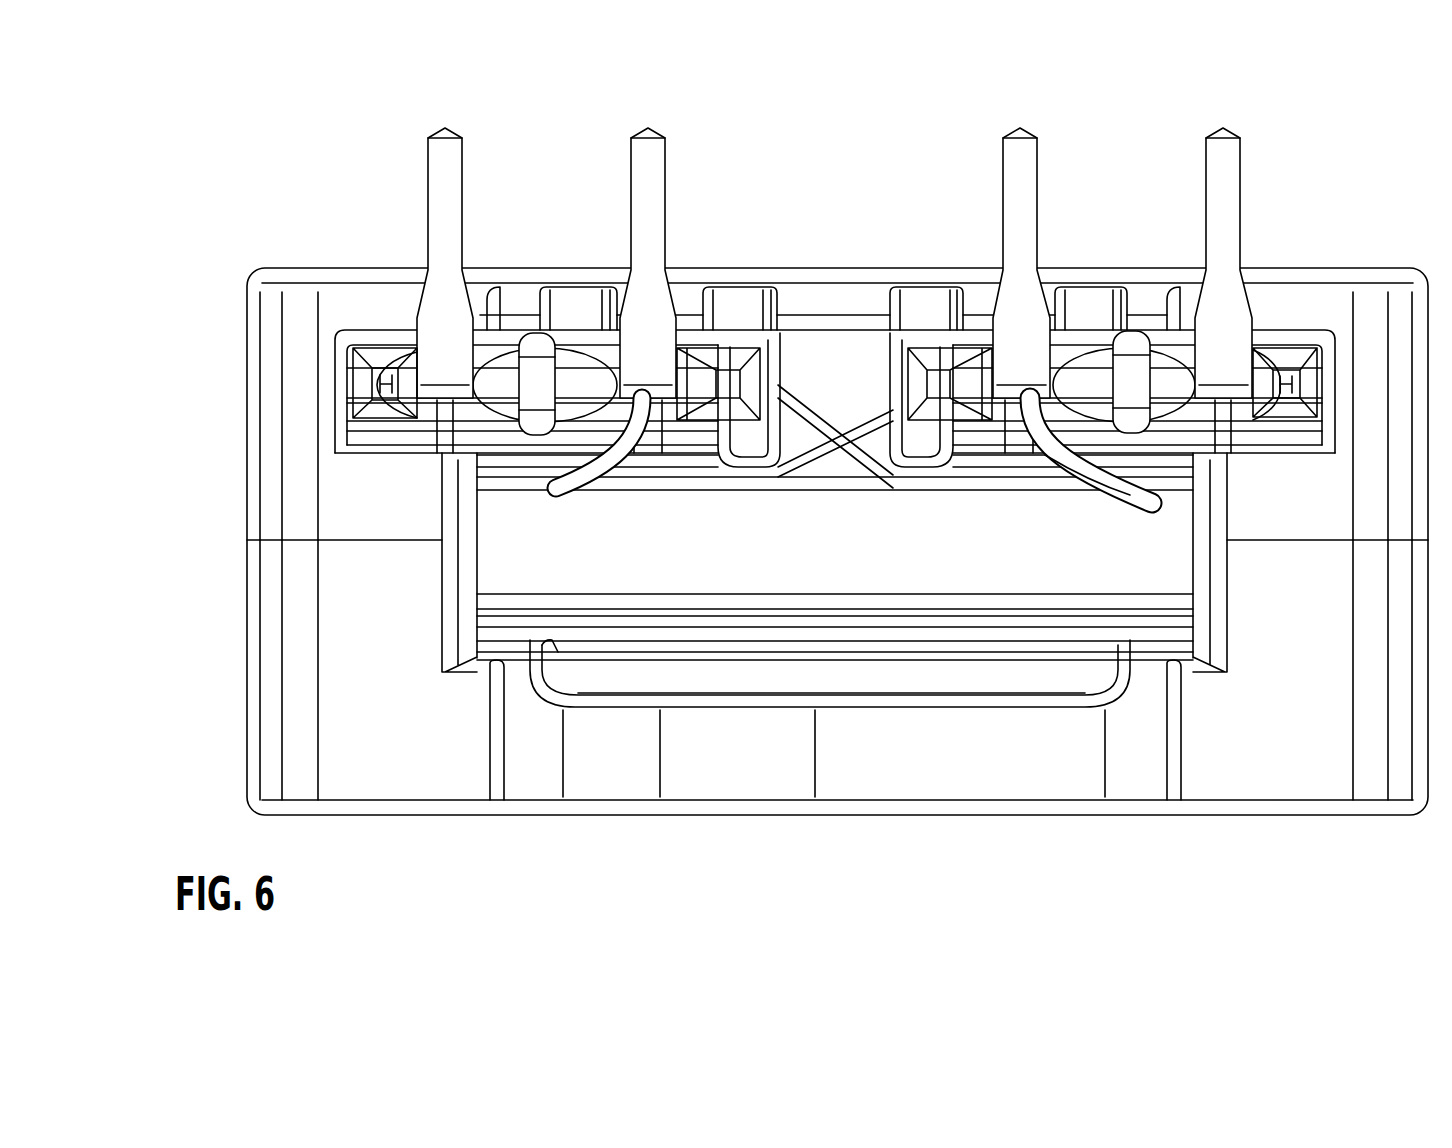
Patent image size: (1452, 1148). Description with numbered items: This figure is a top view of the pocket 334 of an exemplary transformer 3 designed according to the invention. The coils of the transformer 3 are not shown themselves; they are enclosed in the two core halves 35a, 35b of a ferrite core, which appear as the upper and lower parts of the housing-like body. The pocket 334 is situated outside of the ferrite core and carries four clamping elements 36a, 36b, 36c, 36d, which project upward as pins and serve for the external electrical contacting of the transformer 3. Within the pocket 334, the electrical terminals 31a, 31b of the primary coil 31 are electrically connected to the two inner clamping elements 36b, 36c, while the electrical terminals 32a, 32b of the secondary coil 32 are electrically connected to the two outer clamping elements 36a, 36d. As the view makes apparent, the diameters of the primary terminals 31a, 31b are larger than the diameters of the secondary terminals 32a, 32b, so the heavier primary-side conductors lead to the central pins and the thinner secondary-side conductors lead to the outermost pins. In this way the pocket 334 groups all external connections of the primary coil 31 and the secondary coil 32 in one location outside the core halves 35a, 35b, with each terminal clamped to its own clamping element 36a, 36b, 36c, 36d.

The transformer 3 is at (1338, 862).
The primary coil 31 is at (703, 560).
The secondary coil 32 is at (830, 756).
The electrical terminal of primary coil 31a is at (615, 455).
The electrical terminal of primary coil 31b is at (1045, 452).
The electrical terminal of secondary coil 32a is at (1225, 410).
The electrical terminal of secondary coil 32b is at (405, 390).
The pocket 334 is at (237, 124).
The core half 35a is at (362, 497).
The core half 35b is at (362, 637).
The clamping element 36a is at (1224, 158).
The clamping element 36b is at (1019, 158).
The clamping element 36c is at (648, 158).
The clamping element 36d is at (445, 158).